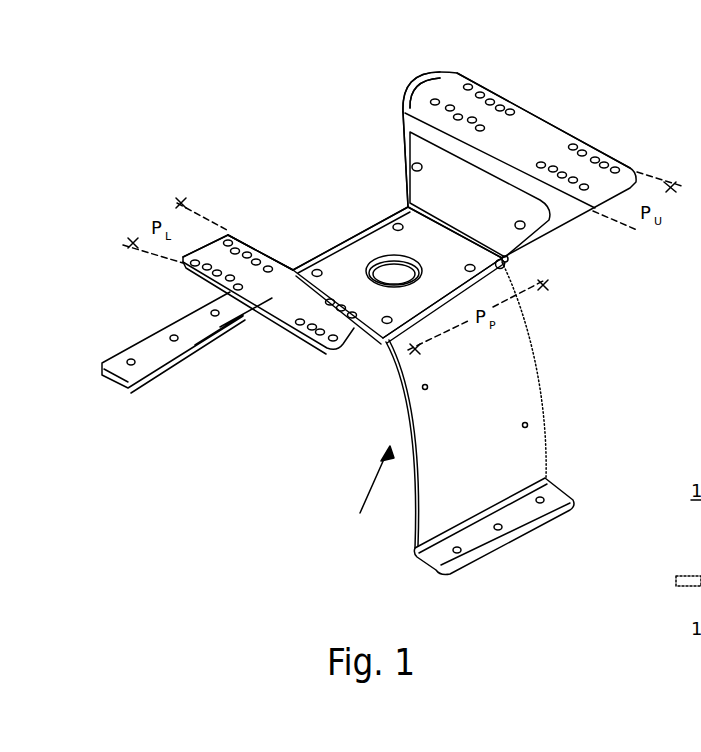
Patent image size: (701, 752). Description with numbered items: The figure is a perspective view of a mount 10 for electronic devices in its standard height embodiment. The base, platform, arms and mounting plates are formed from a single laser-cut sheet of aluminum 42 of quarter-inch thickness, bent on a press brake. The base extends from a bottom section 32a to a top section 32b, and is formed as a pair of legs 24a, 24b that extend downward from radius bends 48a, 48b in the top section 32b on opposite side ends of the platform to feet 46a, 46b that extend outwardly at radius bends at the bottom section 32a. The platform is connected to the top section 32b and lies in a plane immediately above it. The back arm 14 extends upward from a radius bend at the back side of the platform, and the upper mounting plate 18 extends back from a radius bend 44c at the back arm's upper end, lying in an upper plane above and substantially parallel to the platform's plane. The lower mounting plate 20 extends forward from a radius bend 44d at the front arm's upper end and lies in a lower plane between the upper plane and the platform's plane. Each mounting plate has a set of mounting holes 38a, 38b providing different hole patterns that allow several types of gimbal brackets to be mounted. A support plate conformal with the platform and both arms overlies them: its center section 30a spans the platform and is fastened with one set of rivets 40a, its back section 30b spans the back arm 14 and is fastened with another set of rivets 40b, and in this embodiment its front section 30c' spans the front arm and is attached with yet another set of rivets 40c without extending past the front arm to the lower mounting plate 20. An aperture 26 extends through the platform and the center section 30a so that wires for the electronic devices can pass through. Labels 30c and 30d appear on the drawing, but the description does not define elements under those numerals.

The mount 10 is at (147, 92).
The back arm 14 is at (560, 208).
The upper mounting plate 18 is at (528, 135).
The lower mounting plate 20 is at (295, 295).
The leg 24a is at (492, 392).
The leg 24b is at (205, 340).
The aperture 26 is at (392, 278).
The center section of support plate 30a is at (445, 273).
The back section of support plate 30b is at (422, 185).
The front section of support plate 30c' is at (260, 212).
The third side portion of base plate 30c is at (260, 252).
The fourth side portion of base plate 30d is at (412, 213).
The bottom section of base 32a is at (412, 527).
The top section of base 32b is at (385, 324).
The mounting holes 38a is at (613, 167).
The mounting holes 38b is at (360, 324).
The rivets 40a is at (503, 268).
The rivets 40b is at (410, 150).
The rivets 40c is at (686, 598).
The sheet of aluminum 42 is at (366, 489).
The radius bend 44c is at (425, 120).
The radius bend 44d is at (233, 235).
The foot 46a is at (517, 513).
The foot 46b is at (152, 348).
The radius bend 48a is at (442, 315).
The radius bend 48b is at (335, 247).